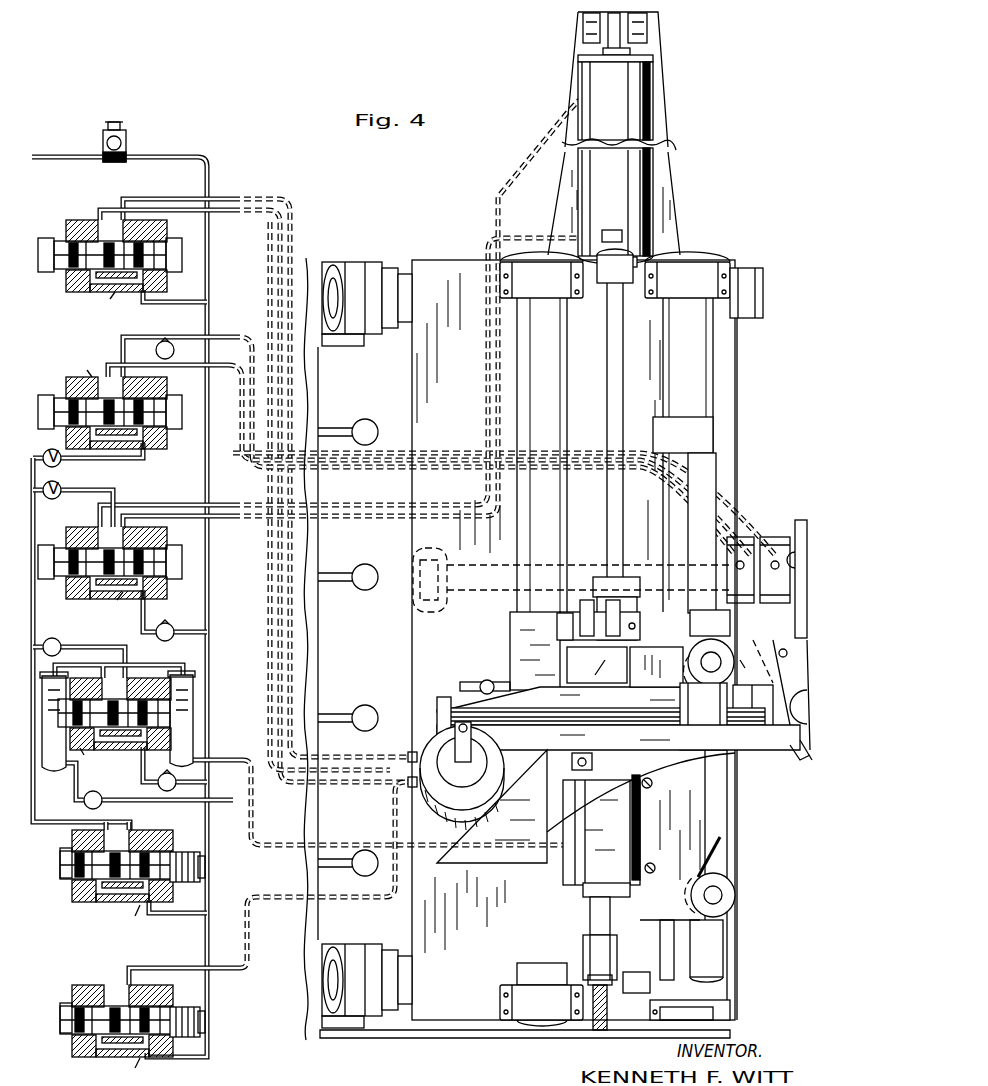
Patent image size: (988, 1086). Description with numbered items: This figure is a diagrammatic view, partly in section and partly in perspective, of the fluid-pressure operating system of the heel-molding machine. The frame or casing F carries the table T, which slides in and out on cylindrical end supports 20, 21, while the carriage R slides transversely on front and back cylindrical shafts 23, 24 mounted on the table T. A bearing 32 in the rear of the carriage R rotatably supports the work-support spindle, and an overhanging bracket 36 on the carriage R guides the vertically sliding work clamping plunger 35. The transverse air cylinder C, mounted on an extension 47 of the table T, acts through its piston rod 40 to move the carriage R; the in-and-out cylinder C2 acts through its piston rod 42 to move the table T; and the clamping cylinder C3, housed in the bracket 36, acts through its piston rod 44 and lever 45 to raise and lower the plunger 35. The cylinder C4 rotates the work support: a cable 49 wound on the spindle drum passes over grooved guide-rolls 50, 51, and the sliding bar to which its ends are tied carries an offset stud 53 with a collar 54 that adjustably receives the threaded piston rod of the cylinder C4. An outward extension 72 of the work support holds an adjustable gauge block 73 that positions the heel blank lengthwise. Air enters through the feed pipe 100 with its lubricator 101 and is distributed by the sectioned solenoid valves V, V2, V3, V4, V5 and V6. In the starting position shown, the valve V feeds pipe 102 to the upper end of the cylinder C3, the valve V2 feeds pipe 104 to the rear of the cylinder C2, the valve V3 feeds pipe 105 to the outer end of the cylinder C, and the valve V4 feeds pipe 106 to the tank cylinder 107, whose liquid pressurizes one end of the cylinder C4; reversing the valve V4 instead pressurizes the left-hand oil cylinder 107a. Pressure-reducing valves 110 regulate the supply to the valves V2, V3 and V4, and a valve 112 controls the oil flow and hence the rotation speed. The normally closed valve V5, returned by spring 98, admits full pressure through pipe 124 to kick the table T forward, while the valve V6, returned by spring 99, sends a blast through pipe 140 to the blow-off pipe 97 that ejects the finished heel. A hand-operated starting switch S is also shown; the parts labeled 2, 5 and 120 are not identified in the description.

The base plate 2 is at (662, 937).
The piston rod 5 is at (590, 922).
The cylindrical end support 20 is at (398, 258).
The cylindrical end support 21 is at (400, 1030).
The front cylindrical shaft 23 is at (560, 342).
The back cylindrical shaft 24 is at (705, 336).
The bearing 32 is at (807, 760).
The work clamping plunger 35 is at (793, 753).
The overhanging bracket 36 is at (678, 770).
The piston rod 40 is at (606, 378).
The piston rod 42 is at (478, 600).
The piston rod 44 is at (460, 768).
The lever 45 is at (595, 720).
The extension 47 is at (666, 140).
The cable 49 is at (722, 845).
The grooved guide-roll 50 is at (708, 650).
The grooved guide-roll 51 is at (735, 905).
The offset stud 53 is at (640, 995).
The collar 54 is at (575, 980).
The outward extension 72 is at (803, 528).
The gauge block 73 is at (797, 540).
The blow-off pipe 97 is at (475, 680).
The spring 98 is at (172, 855).
The spring 99 is at (173, 1010).
The feed pipe 100 is at (38, 163).
The lubricator 101 is at (103, 143).
The pipe 102 is at (213, 200).
The pipe 104 is at (228, 340).
The pipe 105 is at (218, 519).
The pipe 106 is at (152, 667).
The tank cylinder 107 is at (195, 690).
The left-hand oil cylinder 107a is at (40, 773).
The pressure regulating valve 110 is at (165, 341).
The valve 112 is at (62, 632).
The link 120 is at (760, 665).
The pipe 124 is at (58, 830).
The pipe 140 is at (143, 973).
The solenoid-operated valve V is at (62, 242).
The solenoid-operated valve V2 is at (45, 405).
The solenoid-operated valve V3 is at (62, 547).
The solenoid-operated valve V4 is at (70, 715).
The solenoid-operated valve V5 is at (72, 865).
The solenoid-operated valve V6 is at (72, 1020).
The table T is at (420, 262).
The transverse air cylinder C is at (655, 182).
The in-and-out cylinder C2 is at (771, 684).
The clamping cylinder C3 is at (577, 794).
The cylinder C4 is at (645, 846).
The carriage R is at (510, 630).
The starting switch S is at (578, 756).
The frame F is at (300, 940).